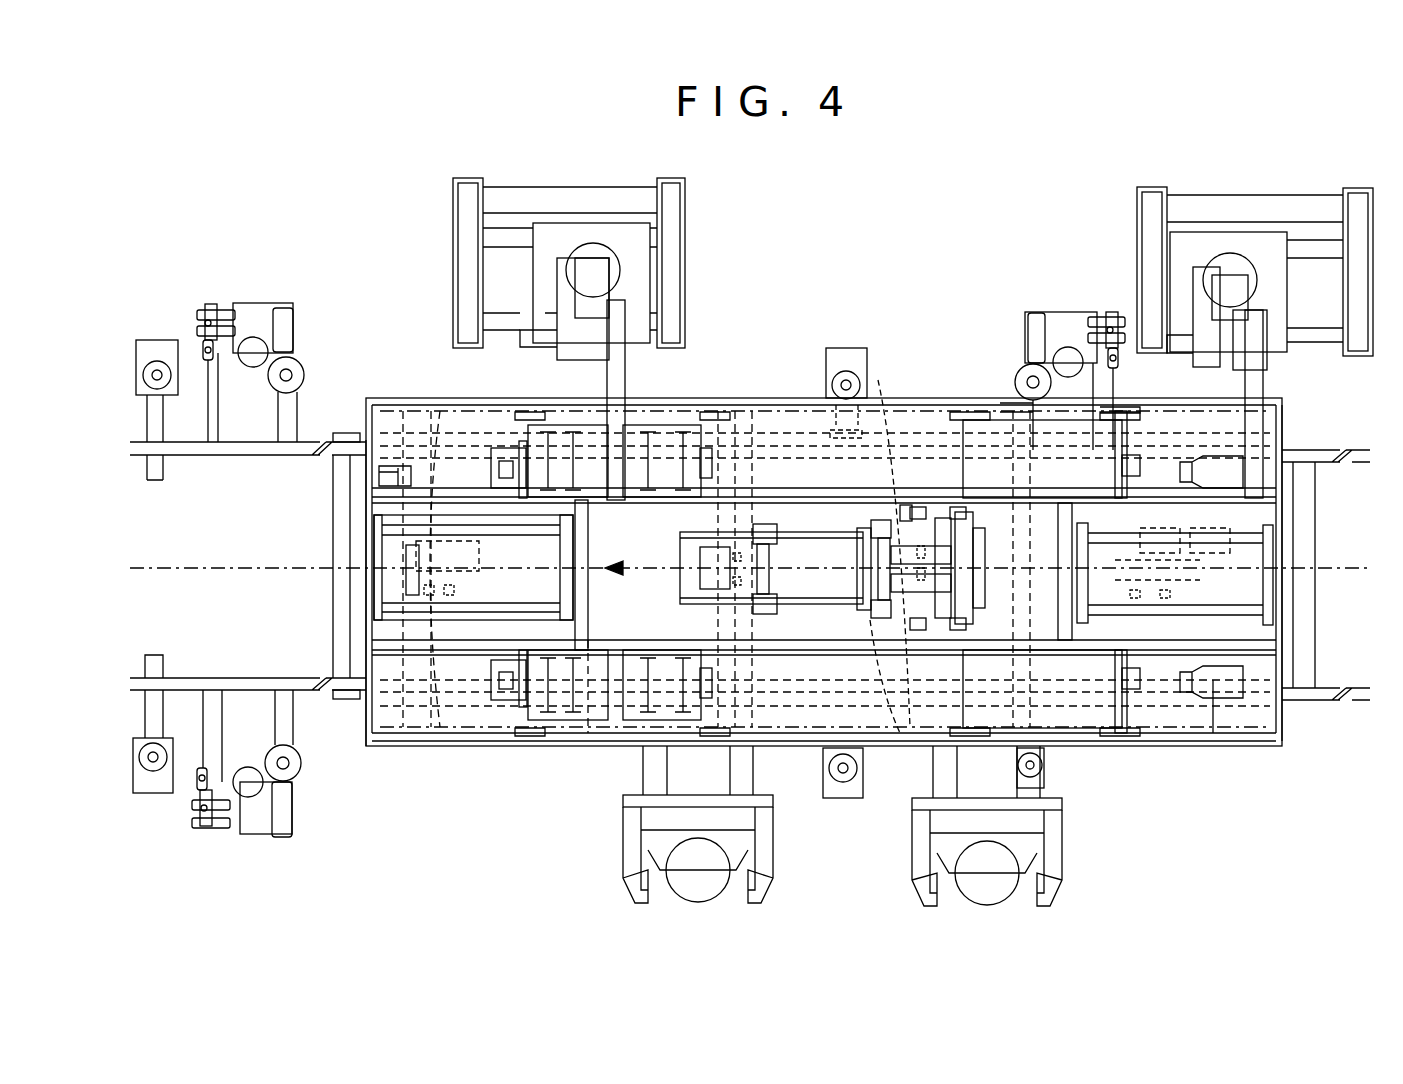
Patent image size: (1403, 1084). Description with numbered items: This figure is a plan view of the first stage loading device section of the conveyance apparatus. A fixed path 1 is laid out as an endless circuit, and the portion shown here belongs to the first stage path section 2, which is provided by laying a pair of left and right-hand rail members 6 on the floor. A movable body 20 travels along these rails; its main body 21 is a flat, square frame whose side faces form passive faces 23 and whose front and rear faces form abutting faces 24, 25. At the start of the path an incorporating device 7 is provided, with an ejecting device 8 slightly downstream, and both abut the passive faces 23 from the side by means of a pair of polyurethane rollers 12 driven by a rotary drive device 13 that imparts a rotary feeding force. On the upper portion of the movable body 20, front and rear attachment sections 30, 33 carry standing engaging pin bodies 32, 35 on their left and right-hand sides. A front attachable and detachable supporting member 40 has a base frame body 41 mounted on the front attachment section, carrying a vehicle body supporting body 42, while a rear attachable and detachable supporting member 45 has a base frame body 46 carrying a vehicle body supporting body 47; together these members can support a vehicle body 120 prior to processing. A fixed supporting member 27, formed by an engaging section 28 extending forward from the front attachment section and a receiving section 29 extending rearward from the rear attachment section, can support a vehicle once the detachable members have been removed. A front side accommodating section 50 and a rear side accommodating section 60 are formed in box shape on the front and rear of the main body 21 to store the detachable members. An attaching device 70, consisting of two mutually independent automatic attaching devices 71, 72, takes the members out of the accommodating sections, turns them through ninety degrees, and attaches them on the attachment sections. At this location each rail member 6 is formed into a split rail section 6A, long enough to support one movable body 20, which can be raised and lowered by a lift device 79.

The fixed path 1 is at (176, 569).
The first stage path section 2 is at (222, 545).
The rail member 6 is at (226, 665).
The split rail section 6A is at (336, 433).
The incorporating device 7 is at (1060, 305).
The ejecting device 8 is at (247, 306).
The roller 12 is at (304, 348).
The rotary drive device 13 is at (1035, 312).
The movable body 20 is at (410, 762).
The main body 21 is at (1195, 750).
The passive face 23 is at (762, 410).
The abutting face 24 is at (358, 690).
The abutting face 25 is at (1285, 742).
The fixed supporting member 27 is at (568, 750).
The engaging section 28 is at (690, 405).
The receiving section 29 is at (990, 450).
The attachment section 30 is at (720, 430).
The engaging pin body 32 is at (760, 750).
The attachment section 33 is at (905, 505).
The engaging pin body 35 is at (850, 540).
The front attachable and detachable supporting member 40 is at (768, 528).
The base frame body 41 is at (575, 551).
The vehicle body supporting body 42 is at (765, 605).
The rear attachable and detachable supporting member 45 is at (890, 690).
The base frame body 46 is at (965, 590).
The vehicle body supporting body 47 is at (912, 475).
The front side accommodating section 50 is at (402, 430).
The rear side accommodating section 60 is at (1240, 748).
The attaching device 70 is at (607, 320).
The automatic attaching device 71 is at (555, 228).
The automatic attaching device 72 is at (1243, 223).
The lift device 79 is at (912, 886).
The vehicle body 120 is at (440, 748).